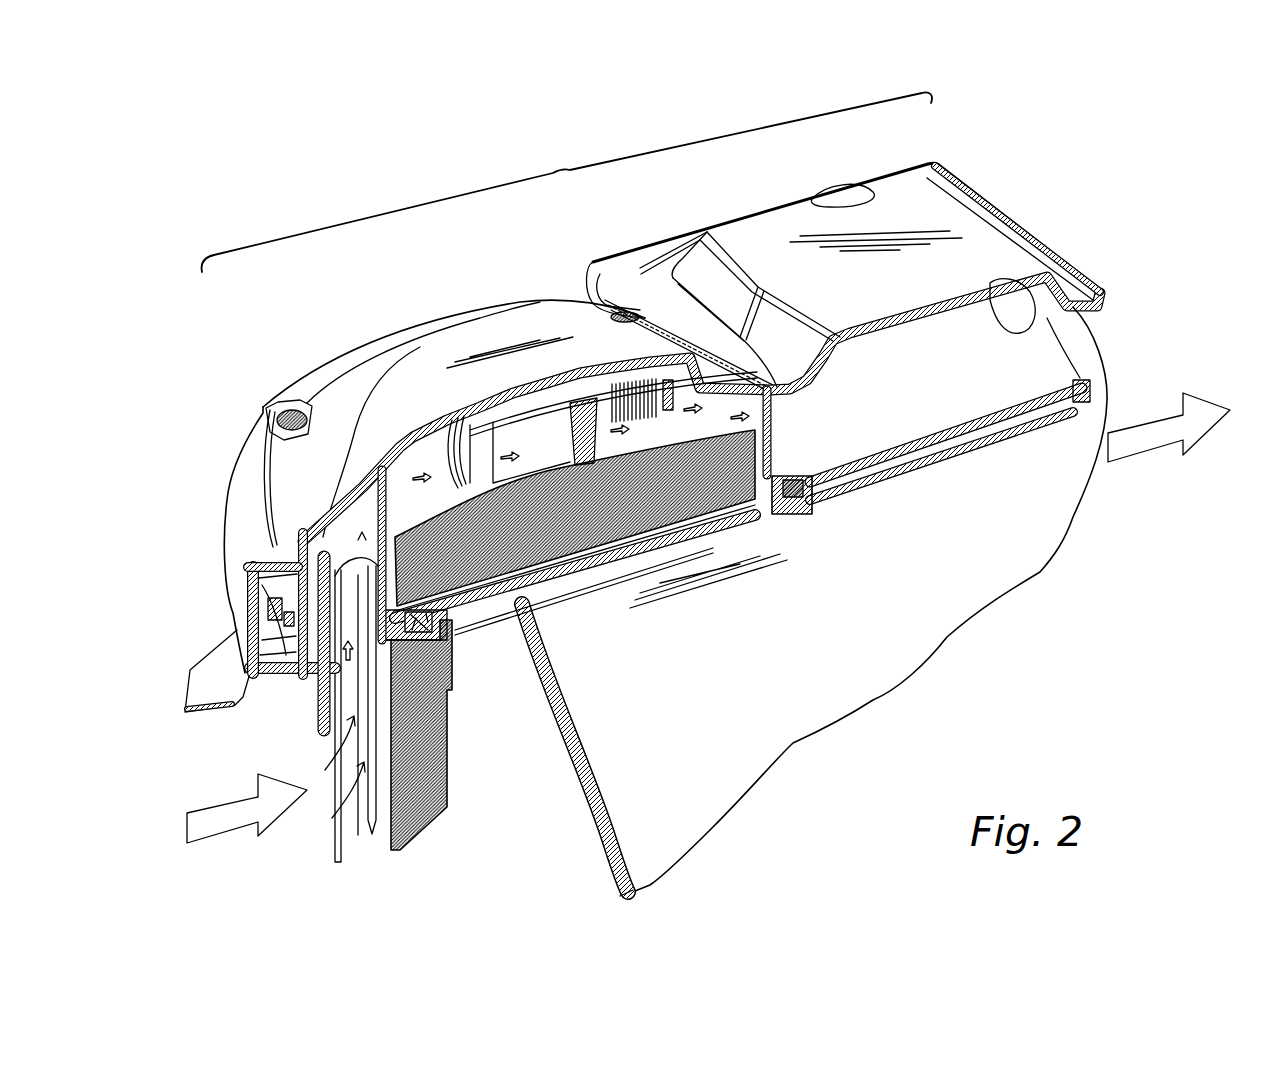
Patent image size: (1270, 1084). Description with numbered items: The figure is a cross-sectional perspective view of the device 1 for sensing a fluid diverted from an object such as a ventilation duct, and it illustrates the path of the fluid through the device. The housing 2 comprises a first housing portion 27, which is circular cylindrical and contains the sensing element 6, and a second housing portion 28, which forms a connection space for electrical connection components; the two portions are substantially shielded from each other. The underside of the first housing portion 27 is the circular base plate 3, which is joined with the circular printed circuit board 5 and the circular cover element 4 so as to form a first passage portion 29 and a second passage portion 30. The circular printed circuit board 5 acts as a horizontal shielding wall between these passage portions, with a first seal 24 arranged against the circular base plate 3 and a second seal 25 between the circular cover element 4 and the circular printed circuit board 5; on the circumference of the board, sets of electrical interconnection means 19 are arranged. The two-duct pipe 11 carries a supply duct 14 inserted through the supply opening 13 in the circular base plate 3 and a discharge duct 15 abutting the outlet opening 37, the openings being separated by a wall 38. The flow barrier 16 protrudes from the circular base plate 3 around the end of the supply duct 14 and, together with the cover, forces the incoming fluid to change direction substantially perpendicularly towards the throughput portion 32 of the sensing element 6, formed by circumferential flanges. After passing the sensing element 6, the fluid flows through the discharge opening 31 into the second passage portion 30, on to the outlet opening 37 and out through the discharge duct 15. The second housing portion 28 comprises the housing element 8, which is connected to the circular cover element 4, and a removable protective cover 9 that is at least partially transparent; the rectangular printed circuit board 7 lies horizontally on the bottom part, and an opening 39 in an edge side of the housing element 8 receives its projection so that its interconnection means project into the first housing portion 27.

The device 1 is at (409, 300).
The housing 2 is at (567, 182).
The circular base plate 3 is at (672, 545).
The circular cover element 4 is at (233, 593).
The circular printed circuit board 5 is at (810, 500).
The sensing element 6 is at (538, 400).
The rectangular printed circuit board 7 is at (1037, 383).
The housing element 8 is at (1083, 393).
The removable protective cover 9 is at (947, 220).
The two-duct pipe 11 is at (448, 733).
The supply opening 13 is at (438, 630).
The supply duct 14 is at (350, 862).
The discharge duct 15 is at (450, 632).
The flow barrier 16 is at (337, 540).
The sets of electrical interconnection means 19 is at (285, 680).
The first seal 24 is at (798, 513).
The second seal 25 is at (785, 480).
The first housing portion 27 is at (348, 408).
The second housing portion 28 is at (987, 247).
The first passage portion 29 is at (437, 445).
The second passage portion 30 is at (692, 545).
The discharge opening 31 is at (775, 520).
The throughput portion 32 is at (468, 425).
The outlet opening 37 is at (520, 598).
The wall 38 is at (407, 557).
The opening 39 is at (773, 458).